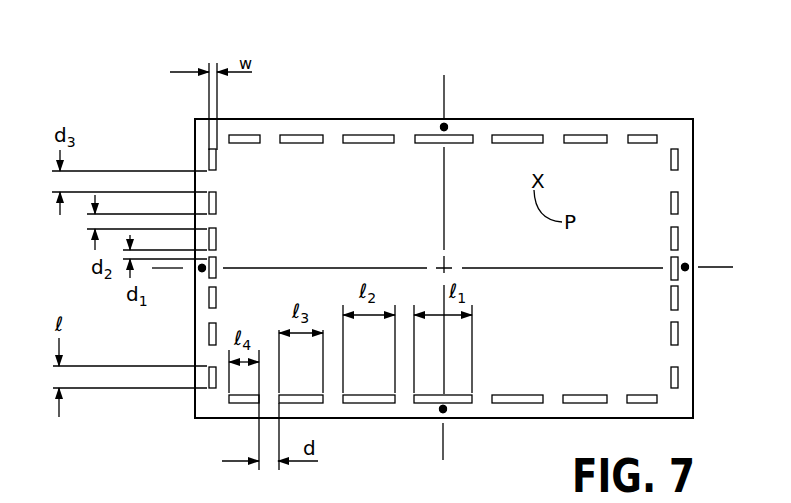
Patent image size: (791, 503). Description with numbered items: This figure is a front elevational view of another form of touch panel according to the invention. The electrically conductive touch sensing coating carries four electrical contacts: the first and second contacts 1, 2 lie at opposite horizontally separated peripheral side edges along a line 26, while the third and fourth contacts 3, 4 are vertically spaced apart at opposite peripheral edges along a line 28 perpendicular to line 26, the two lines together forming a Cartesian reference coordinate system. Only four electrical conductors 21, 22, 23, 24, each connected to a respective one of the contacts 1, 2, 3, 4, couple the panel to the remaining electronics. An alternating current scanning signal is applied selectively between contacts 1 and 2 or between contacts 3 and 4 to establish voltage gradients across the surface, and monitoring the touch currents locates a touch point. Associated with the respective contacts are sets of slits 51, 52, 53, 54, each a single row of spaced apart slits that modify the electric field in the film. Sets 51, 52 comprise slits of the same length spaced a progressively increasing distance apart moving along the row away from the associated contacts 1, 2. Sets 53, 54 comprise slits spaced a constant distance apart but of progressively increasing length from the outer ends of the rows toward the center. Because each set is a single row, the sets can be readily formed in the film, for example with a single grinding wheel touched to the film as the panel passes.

The first contact 1 is at (179, 279).
The second contact 2 is at (708, 257).
The third contact 3 is at (437, 103).
The fourth contact 4 is at (435, 433).
The electrical conductor 21 is at (185, 297).
The electrical conductor 22 is at (687, 270).
The electrical conductor 23 is at (447, 125).
The electrical conductor 24 is at (446, 411).
The line 26 is at (386, 267).
The line 28 is at (445, 232).
The set of slits 51 is at (233, 250).
The set of slits 52 is at (662, 254).
The set of slits 53 is at (432, 152).
The set of slits 54 is at (578, 388).